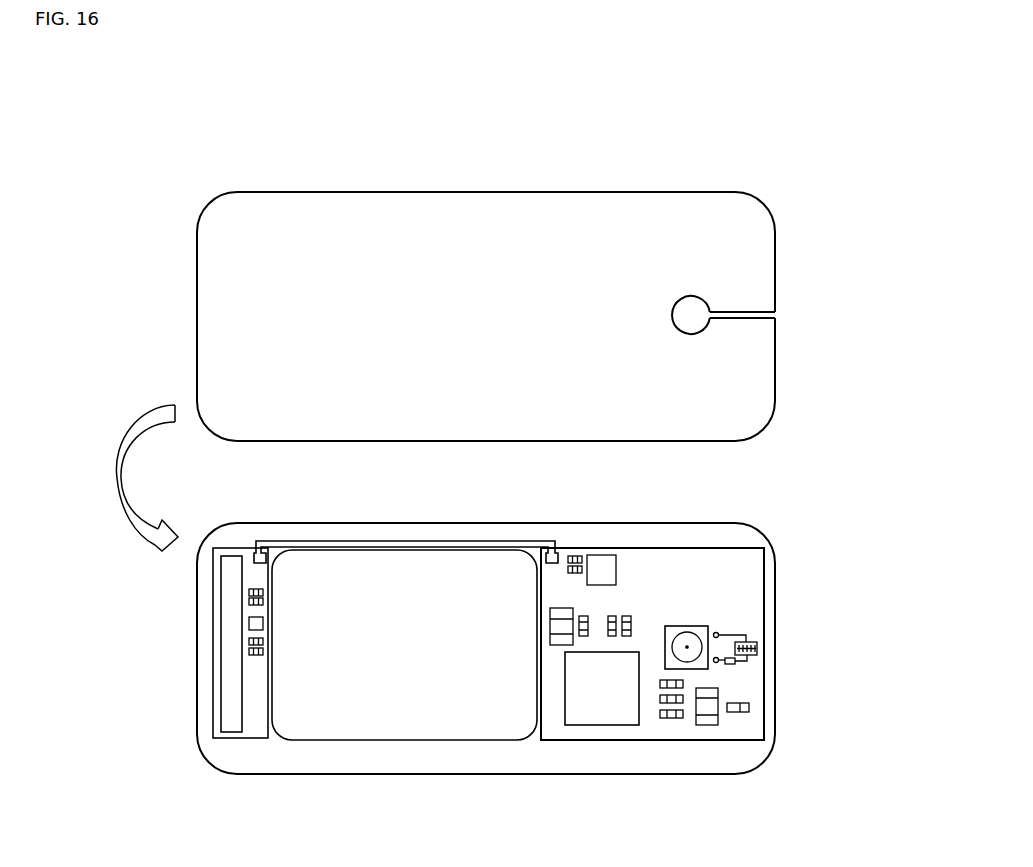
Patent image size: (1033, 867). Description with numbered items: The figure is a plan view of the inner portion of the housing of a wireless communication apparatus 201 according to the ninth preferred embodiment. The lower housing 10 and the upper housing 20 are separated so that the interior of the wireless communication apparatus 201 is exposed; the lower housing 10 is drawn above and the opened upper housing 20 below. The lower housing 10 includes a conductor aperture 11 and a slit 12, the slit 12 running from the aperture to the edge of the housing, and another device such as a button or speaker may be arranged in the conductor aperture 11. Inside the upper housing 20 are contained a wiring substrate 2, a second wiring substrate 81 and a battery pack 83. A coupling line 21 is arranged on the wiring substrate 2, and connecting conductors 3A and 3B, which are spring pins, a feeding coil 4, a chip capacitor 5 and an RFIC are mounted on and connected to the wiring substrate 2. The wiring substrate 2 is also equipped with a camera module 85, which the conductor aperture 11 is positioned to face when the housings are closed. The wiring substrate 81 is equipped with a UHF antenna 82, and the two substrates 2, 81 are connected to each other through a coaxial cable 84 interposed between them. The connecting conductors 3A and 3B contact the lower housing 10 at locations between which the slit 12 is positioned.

The wireless communication apparatus 201 is at (755, 96).
The lower housing 10 is at (500, 207).
The conductor aperture 11 is at (691, 314).
The slit 12 is at (740, 314).
The upper housing 20 is at (762, 762).
The wiring substrate 2 is at (653, 729).
The wiring substrate 81 is at (258, 728).
The UHF antenna 82 is at (232, 642).
The battery pack 83 is at (415, 729).
The coaxial cable 84 is at (428, 540).
The camera module 85 is at (680, 625).
The connecting conductor 3A is at (717, 663).
The connecting conductor 3B is at (718, 634).
The coupling line 21 is at (737, 633).
The feeding coil 4 is at (763, 645).
The chip capacitor 5 is at (737, 662).